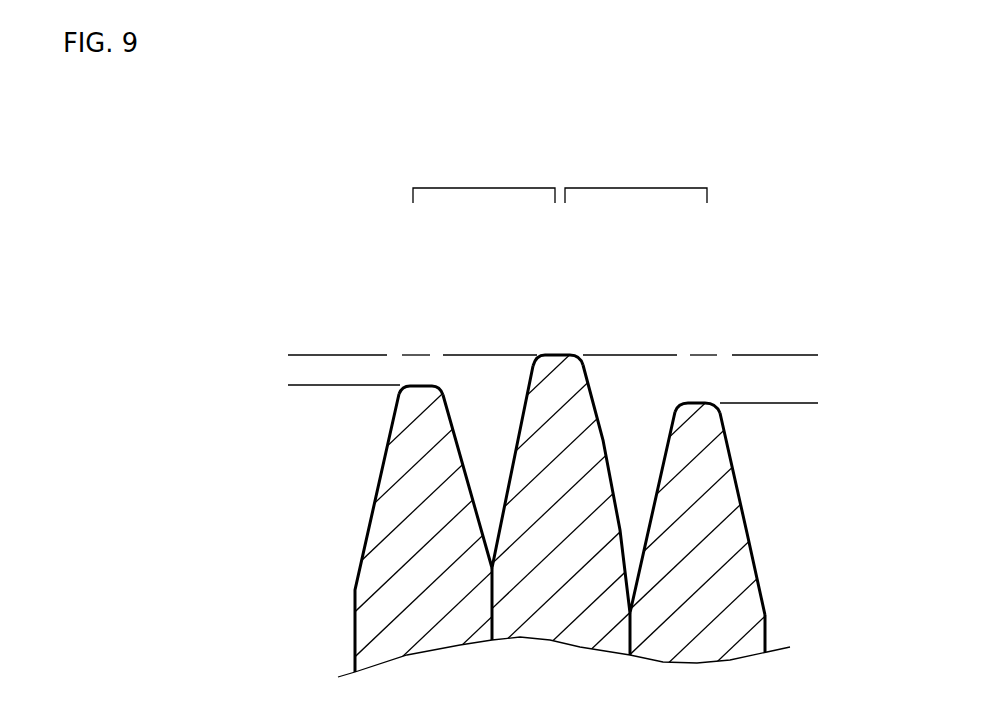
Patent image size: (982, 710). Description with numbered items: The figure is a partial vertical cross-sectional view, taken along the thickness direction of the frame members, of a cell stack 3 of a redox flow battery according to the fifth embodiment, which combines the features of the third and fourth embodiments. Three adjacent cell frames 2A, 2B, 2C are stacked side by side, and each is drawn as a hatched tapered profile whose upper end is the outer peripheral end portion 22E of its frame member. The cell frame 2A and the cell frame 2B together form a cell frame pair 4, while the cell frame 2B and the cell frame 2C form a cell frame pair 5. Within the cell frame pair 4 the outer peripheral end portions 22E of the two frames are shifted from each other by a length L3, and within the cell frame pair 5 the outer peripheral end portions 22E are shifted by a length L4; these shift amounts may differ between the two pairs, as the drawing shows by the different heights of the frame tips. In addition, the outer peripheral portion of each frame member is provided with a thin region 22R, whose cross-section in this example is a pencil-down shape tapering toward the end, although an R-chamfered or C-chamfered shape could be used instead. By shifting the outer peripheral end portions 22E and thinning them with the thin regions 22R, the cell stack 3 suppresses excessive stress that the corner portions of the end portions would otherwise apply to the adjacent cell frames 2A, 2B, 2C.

The cell stack 3 is at (353, 302).
The cell frame 2A is at (422, 405).
The cell frame 2B is at (560, 378).
The cell frame 2C is at (690, 423).
The cell frame pair 4 is at (486, 186).
The cell frame pair 5 is at (640, 186).
The outer peripheral end portion 22E is at (412, 383).
The thin region 22R is at (376, 485).
The length L3 is at (295, 355).
The length L4 is at (810, 355).